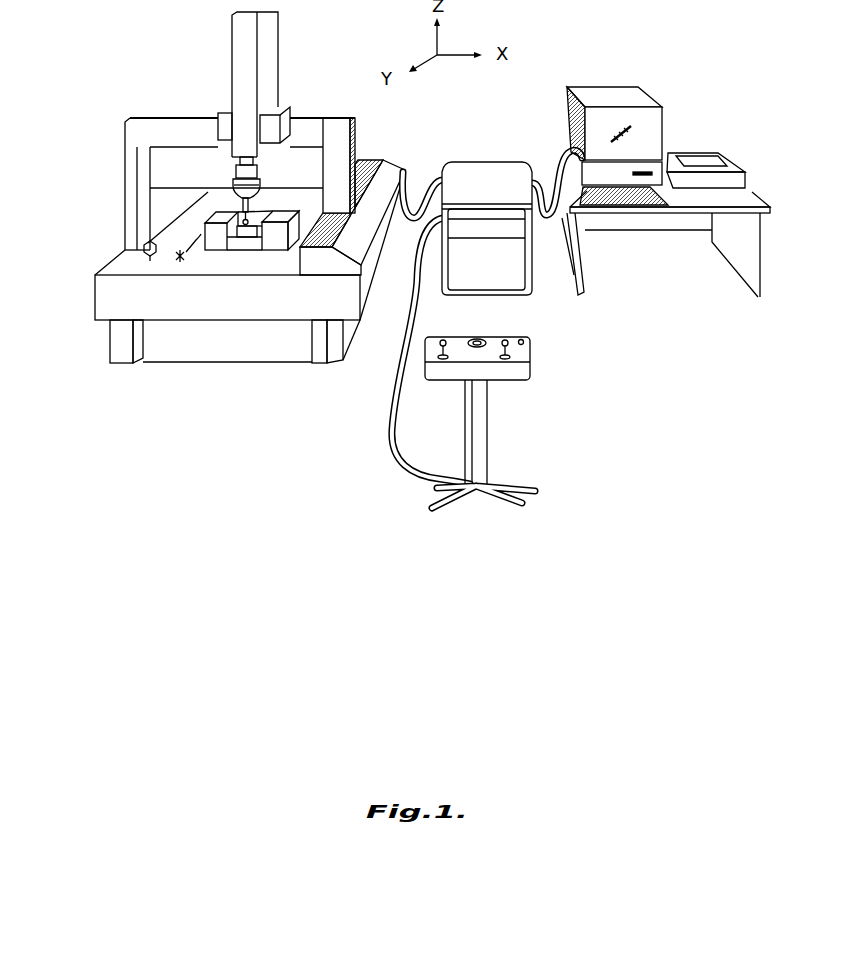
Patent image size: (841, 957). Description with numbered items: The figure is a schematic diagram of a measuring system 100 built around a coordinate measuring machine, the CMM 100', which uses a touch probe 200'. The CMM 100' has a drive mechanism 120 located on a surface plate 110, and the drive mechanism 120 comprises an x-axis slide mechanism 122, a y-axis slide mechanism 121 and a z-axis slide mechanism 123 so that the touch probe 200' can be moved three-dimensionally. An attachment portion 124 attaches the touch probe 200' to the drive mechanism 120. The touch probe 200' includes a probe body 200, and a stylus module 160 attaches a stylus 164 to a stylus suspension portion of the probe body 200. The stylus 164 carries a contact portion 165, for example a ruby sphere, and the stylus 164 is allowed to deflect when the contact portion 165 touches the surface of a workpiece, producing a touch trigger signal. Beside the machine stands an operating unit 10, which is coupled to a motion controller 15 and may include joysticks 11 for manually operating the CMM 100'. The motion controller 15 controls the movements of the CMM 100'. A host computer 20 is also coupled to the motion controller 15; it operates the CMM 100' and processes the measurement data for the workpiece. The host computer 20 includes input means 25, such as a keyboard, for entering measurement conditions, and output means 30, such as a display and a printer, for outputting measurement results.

The CMM 100' is at (214, 187).
The measuring system 100 is at (596, 259).
The surface plate 110 is at (100, 297).
The drive mechanism 120 is at (227, 131).
The y-axis slide mechanism 121 is at (125, 168).
The x-axis slide mechanism 122 is at (160, 118).
The z-axis slide mechanism 123 is at (248, 73).
The attachment portion 124 is at (237, 169).
The stylus module 160 is at (243, 211).
The contact portion 165 is at (256, 215).
The probe body 200 is at (310, 155).
The touch probe 200' is at (310, 155).
The stylus 164 is at (235, 226).
The motion controller 15 is at (488, 162).
The joysticks 11 is at (494, 333).
The operating unit 10 is at (496, 404).
The output means 30 is at (657, 125).
The host computer 20 is at (722, 128).
The input means 25 is at (628, 206).